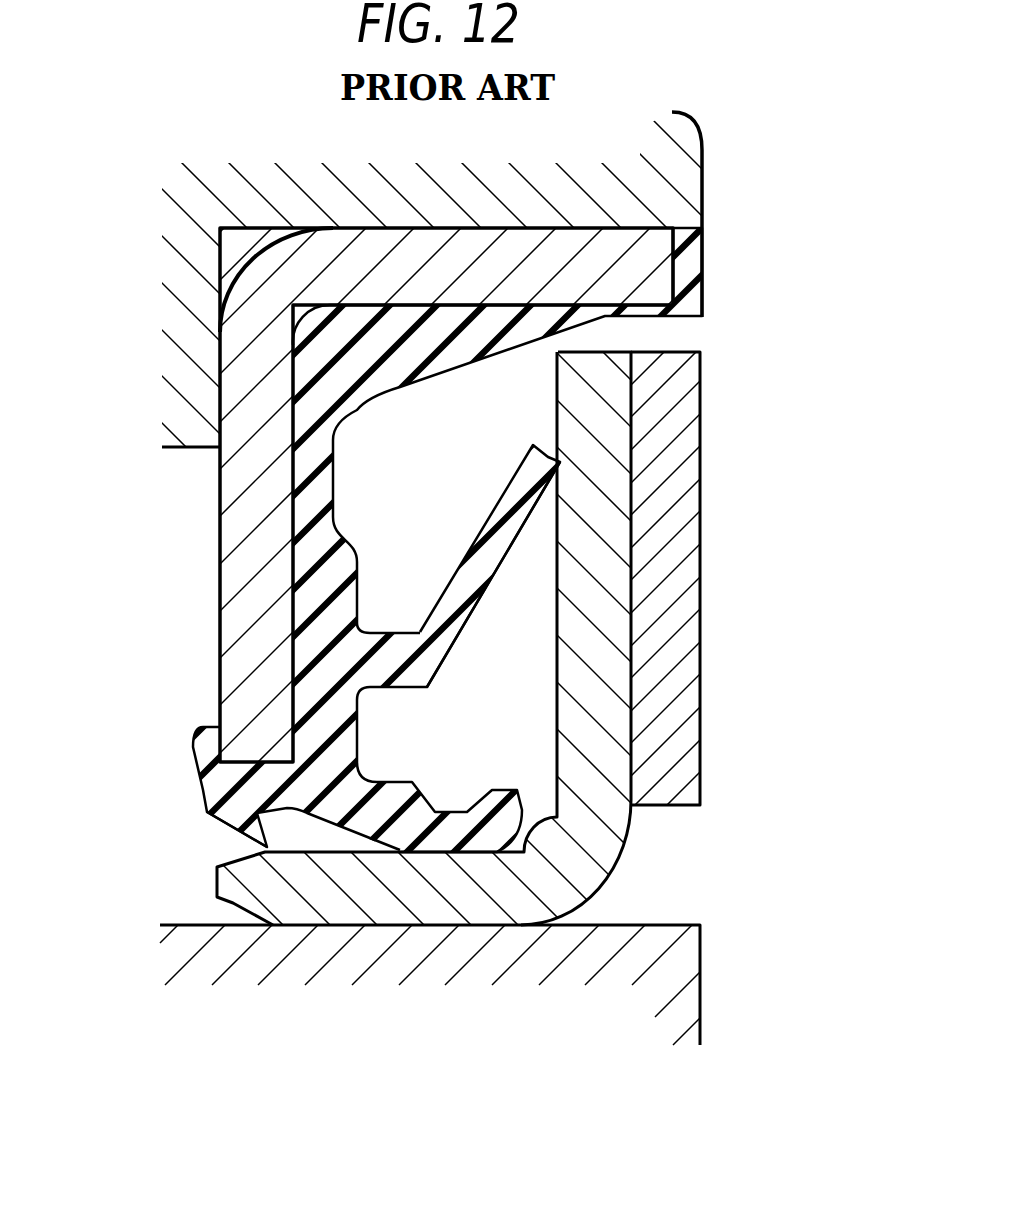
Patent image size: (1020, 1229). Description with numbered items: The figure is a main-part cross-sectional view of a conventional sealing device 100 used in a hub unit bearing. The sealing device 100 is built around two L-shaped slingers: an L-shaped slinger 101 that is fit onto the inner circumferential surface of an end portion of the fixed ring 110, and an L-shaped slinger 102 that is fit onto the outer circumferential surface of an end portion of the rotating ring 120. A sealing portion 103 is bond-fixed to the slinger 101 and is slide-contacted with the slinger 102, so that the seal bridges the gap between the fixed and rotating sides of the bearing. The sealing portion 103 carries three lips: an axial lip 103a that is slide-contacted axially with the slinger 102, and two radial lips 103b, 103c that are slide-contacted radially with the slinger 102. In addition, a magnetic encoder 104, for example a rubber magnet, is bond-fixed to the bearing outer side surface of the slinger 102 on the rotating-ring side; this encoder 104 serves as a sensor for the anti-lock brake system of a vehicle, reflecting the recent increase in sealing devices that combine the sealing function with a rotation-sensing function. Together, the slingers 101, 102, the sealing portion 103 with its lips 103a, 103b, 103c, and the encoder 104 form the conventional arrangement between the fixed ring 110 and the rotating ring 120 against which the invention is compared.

The sealing device 100 is at (510, 634).
The L-shaped slinger 101 is at (243, 497).
The L-shaped slinger 102 is at (596, 421).
The sealing portion 103 is at (338, 385).
The axial lip 103a is at (475, 565).
The radial lip 103b is at (262, 832).
The radial lip 103c is at (447, 835).
The magnetic encoder 104 is at (673, 657).
The fixed ring 110 is at (673, 200).
The rotating ring 120 is at (676, 986).